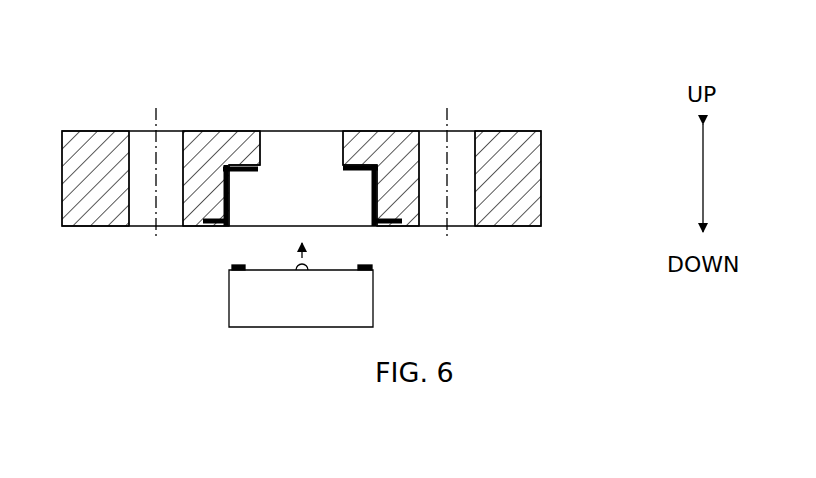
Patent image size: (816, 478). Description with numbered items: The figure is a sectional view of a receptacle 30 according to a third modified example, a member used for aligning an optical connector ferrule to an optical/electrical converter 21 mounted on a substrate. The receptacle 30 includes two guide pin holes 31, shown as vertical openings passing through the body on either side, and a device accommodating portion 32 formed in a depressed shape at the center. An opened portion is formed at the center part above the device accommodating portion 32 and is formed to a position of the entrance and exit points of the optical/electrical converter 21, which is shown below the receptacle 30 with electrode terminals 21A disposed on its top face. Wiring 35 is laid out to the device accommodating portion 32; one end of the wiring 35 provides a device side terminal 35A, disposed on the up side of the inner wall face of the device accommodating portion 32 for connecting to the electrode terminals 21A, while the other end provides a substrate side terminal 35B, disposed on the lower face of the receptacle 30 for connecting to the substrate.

The receptacle 30 is at (541, 178).
The guide pin holes 31 is at (129, 148).
The device accommodating portion 32 is at (322, 207).
The wiring 35 is at (242, 197).
The device side terminal 35A is at (247, 165).
The substrate side terminal 35B is at (212, 226).
The optical/electrical converter 21 is at (365, 302).
The electrode terminals 21A is at (366, 266).